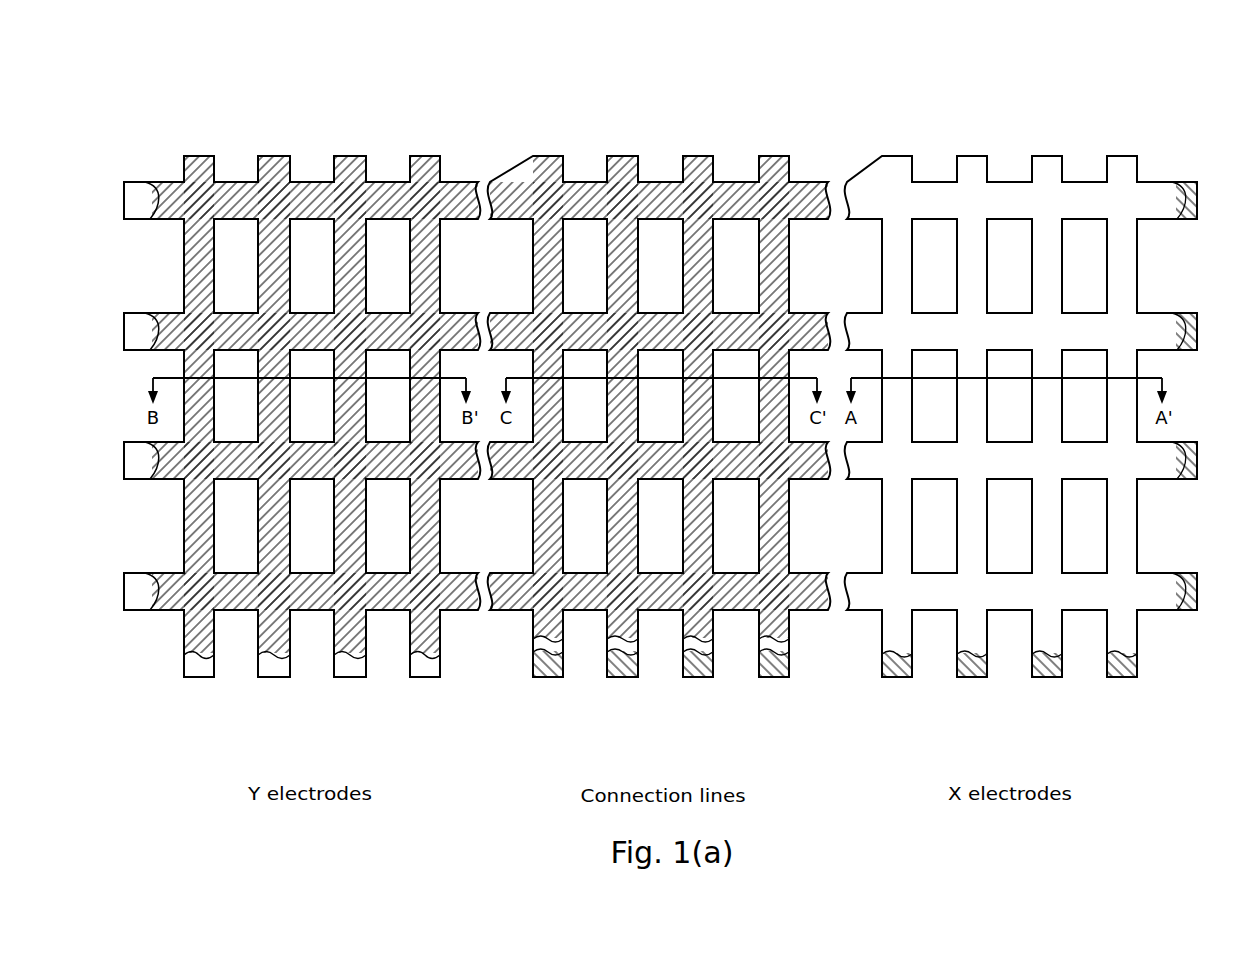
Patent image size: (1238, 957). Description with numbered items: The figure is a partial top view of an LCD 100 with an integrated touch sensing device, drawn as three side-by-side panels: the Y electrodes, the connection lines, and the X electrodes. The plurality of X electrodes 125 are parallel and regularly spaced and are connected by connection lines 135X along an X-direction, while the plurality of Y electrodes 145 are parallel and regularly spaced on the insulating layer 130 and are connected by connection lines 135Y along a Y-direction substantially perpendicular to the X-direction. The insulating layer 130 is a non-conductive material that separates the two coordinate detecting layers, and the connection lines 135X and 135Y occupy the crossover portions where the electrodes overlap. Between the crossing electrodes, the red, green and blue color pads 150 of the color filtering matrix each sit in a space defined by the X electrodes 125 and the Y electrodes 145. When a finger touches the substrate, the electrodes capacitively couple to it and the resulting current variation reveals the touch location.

The LCD 100 is at (687, 59).
The X electrodes 125 is at (1187, 200).
The insulating layer 130 is at (137, 336).
The connection lines 135X is at (550, 670).
The connection lines 135Y is at (545, 178).
The Y electrodes 145 is at (278, 182).
The color pads 150 is at (395, 235).